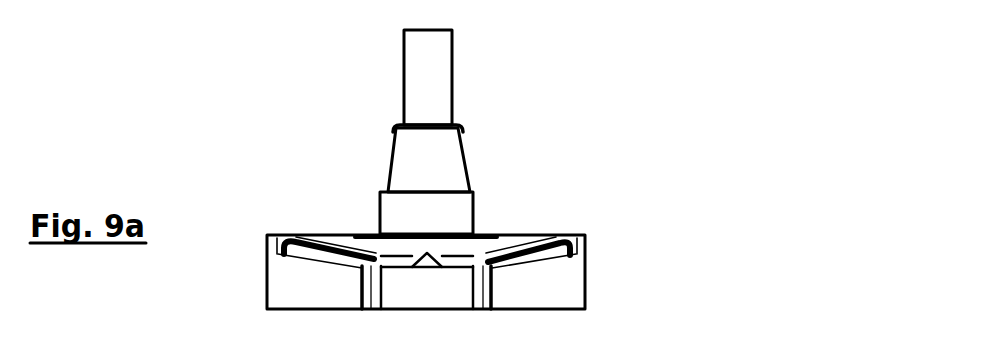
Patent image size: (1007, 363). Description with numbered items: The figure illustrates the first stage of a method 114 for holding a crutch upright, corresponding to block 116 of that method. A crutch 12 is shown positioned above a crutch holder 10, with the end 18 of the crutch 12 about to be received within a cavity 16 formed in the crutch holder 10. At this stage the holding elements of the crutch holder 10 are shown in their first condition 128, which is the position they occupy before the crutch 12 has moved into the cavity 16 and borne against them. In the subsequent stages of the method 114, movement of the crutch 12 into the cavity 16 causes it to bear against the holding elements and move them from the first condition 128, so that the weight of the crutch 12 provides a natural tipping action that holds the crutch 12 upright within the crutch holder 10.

The crutch holder 10 is at (594, 285).
The crutch 12 is at (433, 77).
The cavity 16 is at (405, 292).
The end of the crutch 18 is at (484, 169).
The method 114 is at (618, 80).
The block 116 is at (663, 202).
The first condition 128 is at (347, 222).